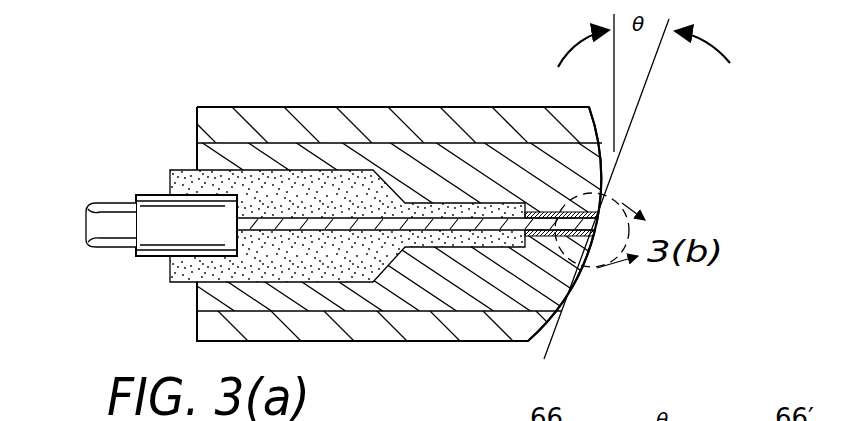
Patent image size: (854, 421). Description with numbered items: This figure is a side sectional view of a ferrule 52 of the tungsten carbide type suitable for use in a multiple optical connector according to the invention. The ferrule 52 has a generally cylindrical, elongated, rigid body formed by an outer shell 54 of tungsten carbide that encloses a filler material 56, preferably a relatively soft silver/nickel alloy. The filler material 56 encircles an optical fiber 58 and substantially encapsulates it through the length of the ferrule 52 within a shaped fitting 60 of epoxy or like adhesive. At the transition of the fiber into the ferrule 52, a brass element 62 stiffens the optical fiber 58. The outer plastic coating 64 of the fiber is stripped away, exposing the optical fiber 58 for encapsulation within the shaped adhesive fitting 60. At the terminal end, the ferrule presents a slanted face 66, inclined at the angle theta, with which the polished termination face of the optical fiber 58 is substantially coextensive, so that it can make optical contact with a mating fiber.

The ferrule 52 is at (396, 178).
The outer shell 54 is at (218, 120).
The filler material 56 is at (305, 150).
The optical fiber 58 is at (595, 226).
The shaped fitting 60 is at (203, 270).
The brass element 62 is at (160, 210).
The outer plastic coating 64 is at (116, 215).
The face 66 is at (592, 120).